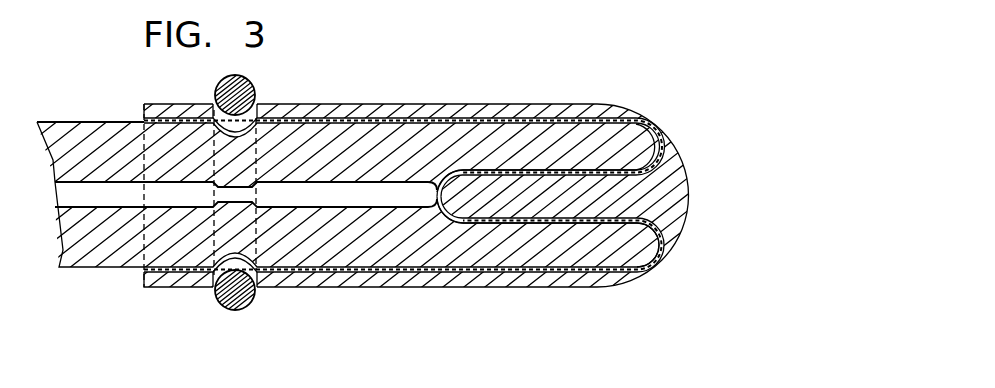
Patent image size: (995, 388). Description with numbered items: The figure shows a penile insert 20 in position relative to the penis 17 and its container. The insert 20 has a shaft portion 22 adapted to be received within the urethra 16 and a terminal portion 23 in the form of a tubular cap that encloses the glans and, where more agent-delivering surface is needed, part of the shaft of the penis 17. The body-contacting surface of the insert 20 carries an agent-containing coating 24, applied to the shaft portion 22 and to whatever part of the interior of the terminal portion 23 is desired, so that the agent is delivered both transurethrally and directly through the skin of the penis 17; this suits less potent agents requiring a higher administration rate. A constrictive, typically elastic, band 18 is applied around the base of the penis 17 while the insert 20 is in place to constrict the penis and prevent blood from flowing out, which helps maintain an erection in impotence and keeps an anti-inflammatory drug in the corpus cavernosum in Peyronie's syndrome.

The urethra 16 is at (358, 198).
The penis 17 is at (423, 135).
The constrictive band 18 is at (247, 308).
The penile insert 20 is at (690, 132).
The shaft portion 22 is at (642, 204).
The terminal portion 23 is at (573, 113).
The agent-containing coating 24 is at (492, 273).